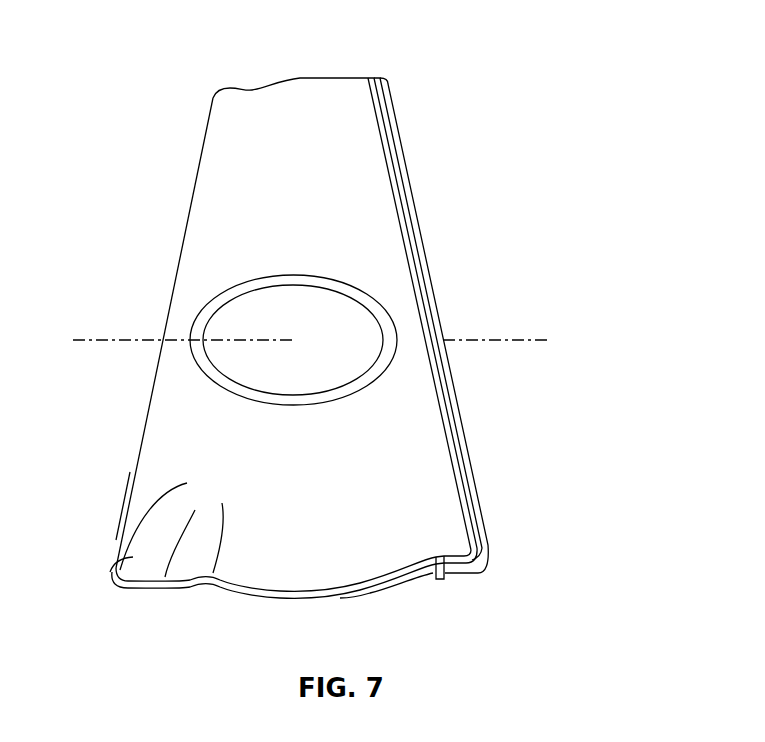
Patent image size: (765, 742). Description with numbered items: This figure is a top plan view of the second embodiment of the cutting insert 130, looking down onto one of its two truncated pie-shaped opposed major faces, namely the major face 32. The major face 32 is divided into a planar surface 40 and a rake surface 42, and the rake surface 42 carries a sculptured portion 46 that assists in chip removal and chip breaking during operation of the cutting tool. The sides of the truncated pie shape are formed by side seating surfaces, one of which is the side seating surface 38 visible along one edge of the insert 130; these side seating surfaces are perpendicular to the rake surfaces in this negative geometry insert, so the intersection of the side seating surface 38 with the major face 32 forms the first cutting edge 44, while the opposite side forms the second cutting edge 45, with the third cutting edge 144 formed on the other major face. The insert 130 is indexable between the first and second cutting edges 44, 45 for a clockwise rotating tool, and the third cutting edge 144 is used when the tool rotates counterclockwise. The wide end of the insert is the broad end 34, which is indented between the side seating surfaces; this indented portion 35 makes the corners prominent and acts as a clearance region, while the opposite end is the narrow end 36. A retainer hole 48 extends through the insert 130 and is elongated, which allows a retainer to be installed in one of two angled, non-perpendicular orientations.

The insert 130 is at (156, 46).
The narrow end 36 is at (261, 74).
The rake surface 42 is at (200, 208).
The planar surface 40 is at (357, 192).
The retainer hole 48 is at (217, 351).
The side seating surface 38 is at (437, 352).
The third cutting edge 144 is at (450, 423).
The first cutting edge 44 is at (490, 530).
The indented portion 35 is at (421, 578).
The broad end 34 is at (273, 610).
The major face 32 is at (198, 481).
The second cutting edge 45 is at (130, 472).
The sculptured portion 46 is at (115, 572).